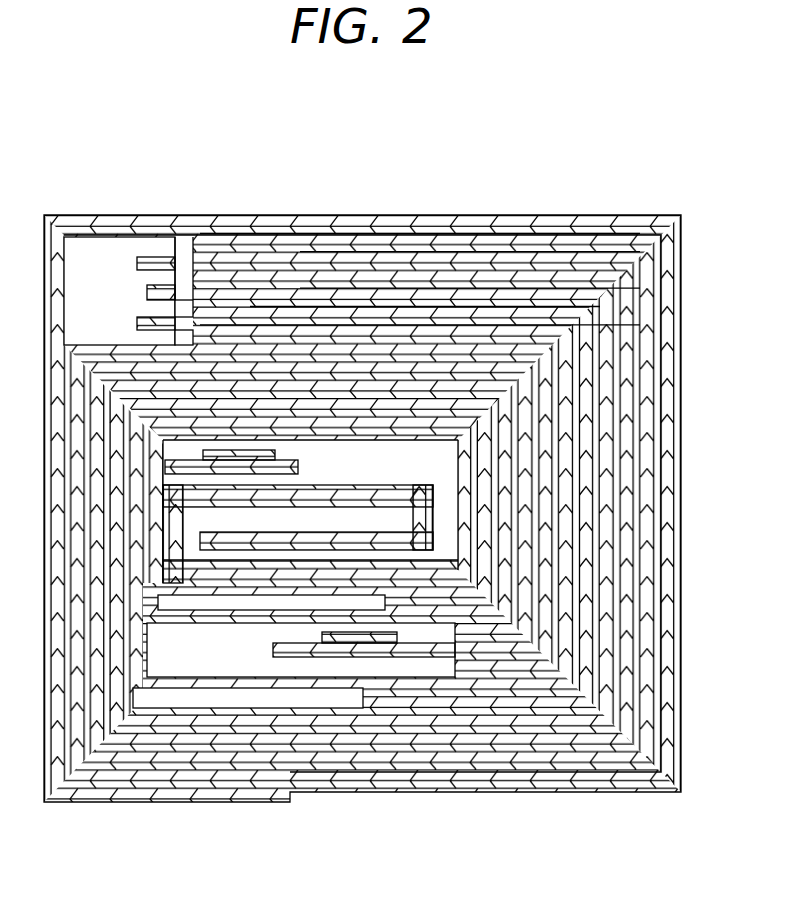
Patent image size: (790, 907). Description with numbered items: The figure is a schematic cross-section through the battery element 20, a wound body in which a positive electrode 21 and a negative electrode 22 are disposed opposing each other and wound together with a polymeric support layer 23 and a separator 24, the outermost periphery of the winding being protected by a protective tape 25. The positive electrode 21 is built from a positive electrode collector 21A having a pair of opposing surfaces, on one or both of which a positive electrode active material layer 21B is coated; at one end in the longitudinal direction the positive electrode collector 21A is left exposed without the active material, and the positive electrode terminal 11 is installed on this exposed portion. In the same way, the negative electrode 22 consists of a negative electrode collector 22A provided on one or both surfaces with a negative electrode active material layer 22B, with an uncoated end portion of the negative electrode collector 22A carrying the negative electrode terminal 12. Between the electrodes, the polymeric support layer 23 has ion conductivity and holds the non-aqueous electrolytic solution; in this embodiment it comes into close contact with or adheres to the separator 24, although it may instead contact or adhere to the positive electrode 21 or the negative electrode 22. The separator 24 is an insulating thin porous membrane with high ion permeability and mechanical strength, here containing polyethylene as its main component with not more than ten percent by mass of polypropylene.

The positive electrode terminal 11 is at (212, 462).
The negative electrode terminal 12 is at (355, 640).
The battery element 20 is at (366, 452).
The positive electrode 21 is at (165, 210).
The positive electrode collector 21A is at (163, 278).
The positive electrode active material layer 21B is at (175, 276).
The negative electrode 22 is at (420, 210).
The negative electrode collector 22A is at (305, 228).
The negative electrode active material layer 22B is at (415, 330).
The polymeric support layer 23 is at (528, 325).
The separator 24 is at (568, 305).
The protective tape 25 is at (640, 215).